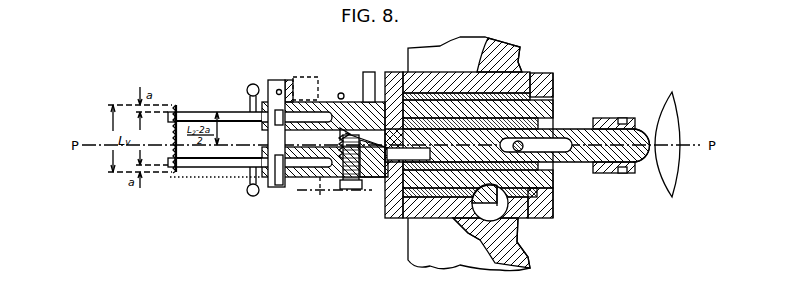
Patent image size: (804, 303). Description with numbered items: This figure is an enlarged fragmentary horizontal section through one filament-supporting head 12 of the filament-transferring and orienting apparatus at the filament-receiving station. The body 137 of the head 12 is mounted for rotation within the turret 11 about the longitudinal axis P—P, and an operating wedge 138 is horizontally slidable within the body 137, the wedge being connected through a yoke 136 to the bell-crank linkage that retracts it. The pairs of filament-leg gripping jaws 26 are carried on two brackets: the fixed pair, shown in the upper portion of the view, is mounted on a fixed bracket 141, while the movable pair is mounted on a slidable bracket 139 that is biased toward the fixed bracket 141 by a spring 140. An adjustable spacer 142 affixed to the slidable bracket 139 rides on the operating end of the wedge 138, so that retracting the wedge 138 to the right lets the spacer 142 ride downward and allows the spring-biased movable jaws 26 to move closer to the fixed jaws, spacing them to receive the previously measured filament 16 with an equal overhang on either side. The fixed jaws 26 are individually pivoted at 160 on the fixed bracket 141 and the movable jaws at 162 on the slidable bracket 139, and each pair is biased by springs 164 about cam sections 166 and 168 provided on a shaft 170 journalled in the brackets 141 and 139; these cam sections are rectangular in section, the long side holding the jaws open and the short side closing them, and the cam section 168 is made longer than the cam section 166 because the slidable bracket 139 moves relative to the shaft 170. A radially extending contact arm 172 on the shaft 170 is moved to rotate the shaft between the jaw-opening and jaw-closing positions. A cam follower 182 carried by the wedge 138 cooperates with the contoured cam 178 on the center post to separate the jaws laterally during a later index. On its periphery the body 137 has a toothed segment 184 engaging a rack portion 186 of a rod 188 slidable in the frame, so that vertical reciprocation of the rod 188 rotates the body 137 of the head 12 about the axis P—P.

The turret 11 is at (512, 262).
The filament-supporting head 12 is at (396, 70).
The filament 16 is at (178, 155).
The filament-leg gripping jaws 26 is at (227, 160).
The yoke 136 is at (604, 173).
The body 137 is at (553, 100).
The operating wedge 138 is at (575, 128).
The slidable bracket 139 is at (297, 178).
The spring 140 is at (344, 130).
The fixed bracket 141 is at (343, 92).
The adjustable spacer 142 is at (348, 191).
The pivot 160 is at (331, 98).
The pivot 162 is at (323, 178).
The springs 164 is at (253, 84).
The cam section 166 is at (274, 120).
The cam section 168 is at (277, 187).
The shaft 170 is at (279, 80).
The contact arm 172 is at (291, 80).
The cam 178 is at (668, 112).
The cam follower 182 is at (645, 162).
The toothed segment 184 is at (553, 190).
The rack portion 186 is at (500, 213).
The rod 188 is at (474, 214).